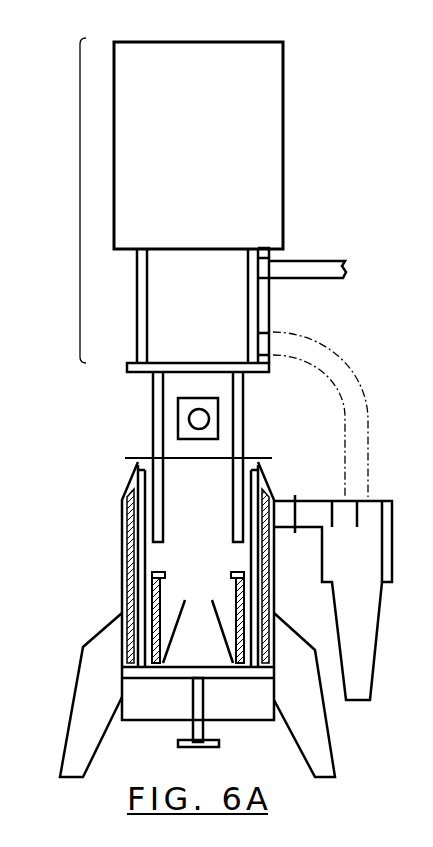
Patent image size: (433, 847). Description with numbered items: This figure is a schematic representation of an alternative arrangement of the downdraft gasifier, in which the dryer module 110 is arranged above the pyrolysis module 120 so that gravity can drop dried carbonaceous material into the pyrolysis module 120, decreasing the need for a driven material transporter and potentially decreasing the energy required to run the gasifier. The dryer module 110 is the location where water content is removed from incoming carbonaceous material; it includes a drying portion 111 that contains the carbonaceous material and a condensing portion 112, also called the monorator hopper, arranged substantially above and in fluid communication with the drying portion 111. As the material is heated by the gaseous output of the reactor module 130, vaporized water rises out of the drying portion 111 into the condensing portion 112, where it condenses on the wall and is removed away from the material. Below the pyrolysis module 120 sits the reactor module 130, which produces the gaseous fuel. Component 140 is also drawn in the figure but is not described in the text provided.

The dryer module 110 is at (80, 202).
The drying portion 111 is at (270, 308).
The condensing portion 112 is at (283, 145).
The pyrolysis module 120 is at (153, 437).
The reactor module 130 is at (122, 560).
The cyclone separator 140 is at (360, 632).